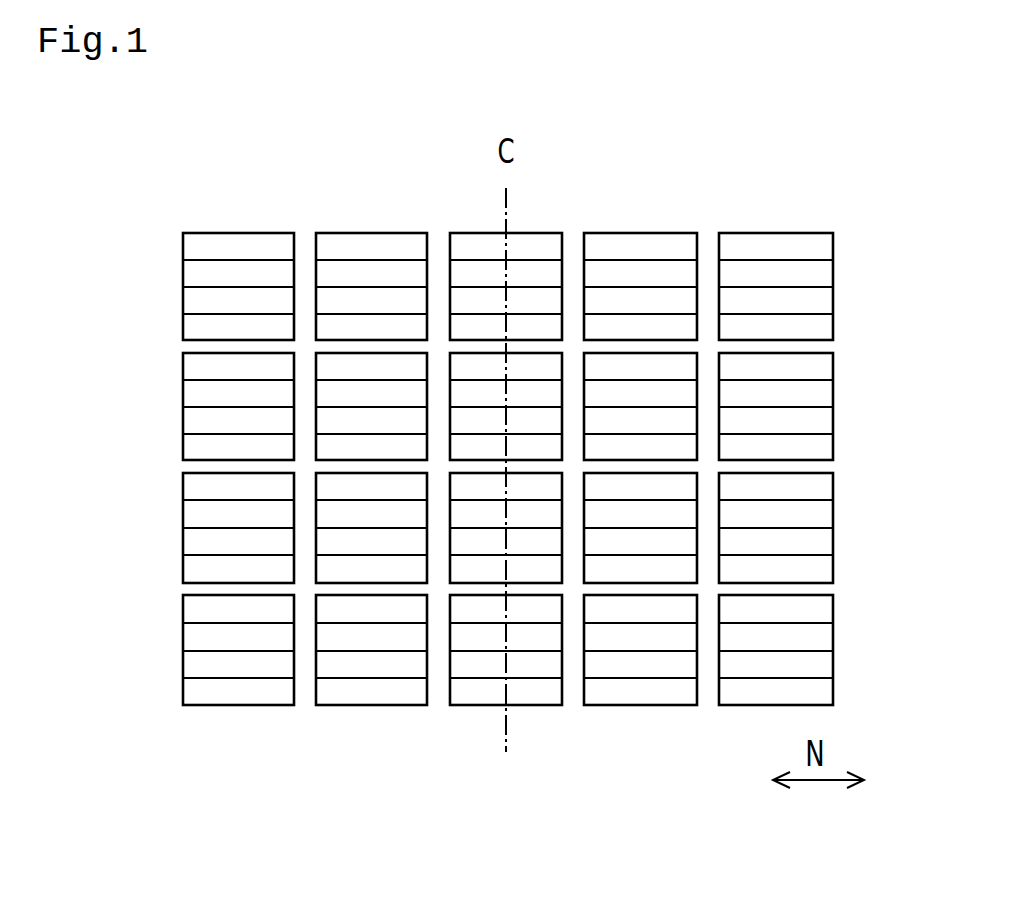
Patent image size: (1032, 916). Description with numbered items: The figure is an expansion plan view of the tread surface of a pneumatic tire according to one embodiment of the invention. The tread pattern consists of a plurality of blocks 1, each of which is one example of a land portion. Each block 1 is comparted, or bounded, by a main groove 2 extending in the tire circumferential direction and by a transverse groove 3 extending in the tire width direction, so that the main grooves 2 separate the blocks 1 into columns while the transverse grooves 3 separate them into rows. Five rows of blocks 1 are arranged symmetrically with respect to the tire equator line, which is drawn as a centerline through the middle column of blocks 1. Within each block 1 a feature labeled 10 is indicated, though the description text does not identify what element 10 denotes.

The block 1 is at (238, 233).
The sheet 10 is at (357, 257).
The main groove 2 is at (304, 706).
The transverse groove 3 is at (832, 347).